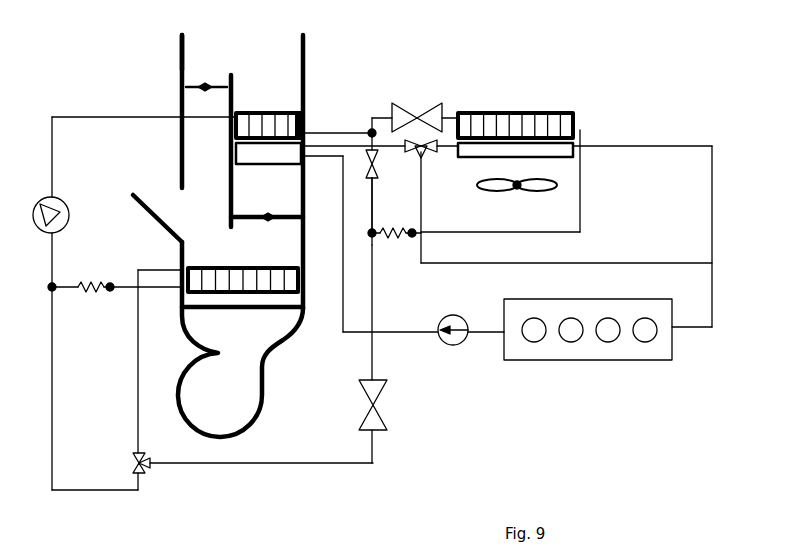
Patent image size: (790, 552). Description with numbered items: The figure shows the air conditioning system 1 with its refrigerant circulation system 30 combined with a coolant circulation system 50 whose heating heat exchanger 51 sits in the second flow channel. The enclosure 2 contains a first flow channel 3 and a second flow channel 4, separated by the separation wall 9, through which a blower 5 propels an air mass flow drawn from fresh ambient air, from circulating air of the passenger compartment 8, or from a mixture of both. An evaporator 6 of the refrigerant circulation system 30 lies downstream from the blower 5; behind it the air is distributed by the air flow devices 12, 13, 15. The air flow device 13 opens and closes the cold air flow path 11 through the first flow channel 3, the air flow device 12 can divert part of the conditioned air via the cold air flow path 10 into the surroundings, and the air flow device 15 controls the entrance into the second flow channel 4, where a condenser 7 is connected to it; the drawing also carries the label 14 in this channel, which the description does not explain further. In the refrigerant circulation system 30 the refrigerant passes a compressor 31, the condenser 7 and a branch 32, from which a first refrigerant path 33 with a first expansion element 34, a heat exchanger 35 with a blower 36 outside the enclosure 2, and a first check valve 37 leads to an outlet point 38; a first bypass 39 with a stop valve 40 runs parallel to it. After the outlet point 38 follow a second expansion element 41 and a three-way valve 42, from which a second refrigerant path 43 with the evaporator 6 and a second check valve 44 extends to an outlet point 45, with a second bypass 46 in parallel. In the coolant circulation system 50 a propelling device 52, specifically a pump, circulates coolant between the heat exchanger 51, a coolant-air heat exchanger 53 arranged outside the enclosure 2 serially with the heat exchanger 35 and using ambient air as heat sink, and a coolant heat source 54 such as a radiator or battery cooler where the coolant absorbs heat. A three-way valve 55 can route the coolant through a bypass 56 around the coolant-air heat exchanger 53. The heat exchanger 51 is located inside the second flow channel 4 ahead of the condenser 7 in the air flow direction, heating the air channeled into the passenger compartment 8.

The air conditioning system 1 is at (641, 64).
The enclosure 2 is at (182, 88).
The first flow channel 3 is at (172, 102).
The second flow channel 4 is at (315, 75).
The blower 5 is at (224, 401).
The evaporator 6 is at (287, 287).
The condenser 7 is at (295, 112).
The passenger compartment 8 is at (246, 53).
The separation wall 9 is at (231, 194).
The cold air flow path 10 is at (174, 179).
The cold air flow path 11 is at (216, 158).
The air flow device 12 is at (133, 193).
The air flow device 13 is at (182, 63).
The heat exchanger 14 is at (277, 103).
The air flow device 15 is at (272, 220).
The refrigerant circulation system 30 is at (395, 468).
The compressor 31 is at (62, 216).
The branch 32 is at (372, 133).
The first refrigerant path 33 is at (386, 118).
The first expansion element 34 is at (418, 116).
The heat exchanger 35 is at (548, 117).
The blower 36 is at (517, 188).
The first check valve 37 is at (408, 248).
The outlet point 38 is at (370, 236).
The first bypass 39 is at (376, 203).
The stop valve 40 is at (390, 165).
The second expansion element 41 is at (386, 405).
The three-way valve 42 is at (135, 460).
The second refrigerant path 43 is at (137, 383).
The second check valve 44 is at (110, 289).
The outlet point 45 is at (54, 289).
The second bypass 46 is at (52, 418).
The coolant circulation system 50 is at (698, 202).
The heat exchanger 51 is at (272, 157).
The propelling device 52 is at (452, 345).
The coolant-air heat exchanger 53 is at (565, 150).
The coolant heat source 54 is at (555, 348).
The three-way valve 55 is at (426, 154).
The bypass 56 is at (488, 265).